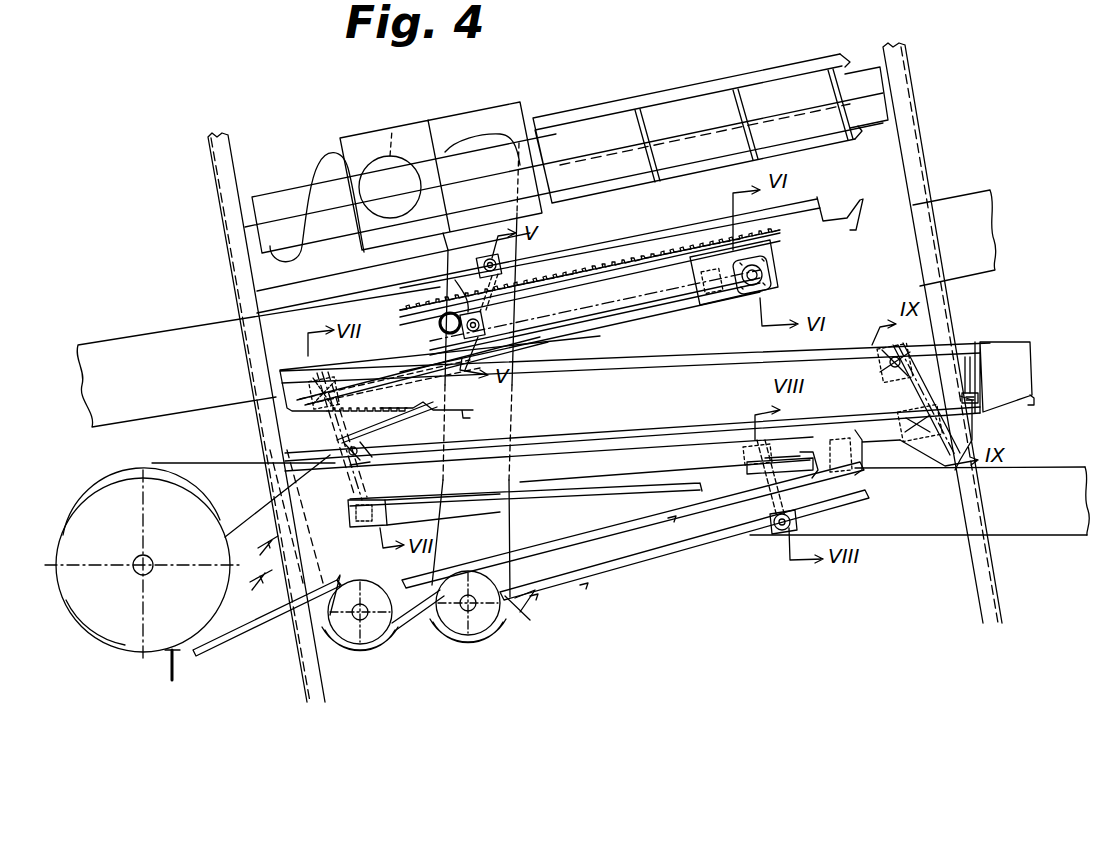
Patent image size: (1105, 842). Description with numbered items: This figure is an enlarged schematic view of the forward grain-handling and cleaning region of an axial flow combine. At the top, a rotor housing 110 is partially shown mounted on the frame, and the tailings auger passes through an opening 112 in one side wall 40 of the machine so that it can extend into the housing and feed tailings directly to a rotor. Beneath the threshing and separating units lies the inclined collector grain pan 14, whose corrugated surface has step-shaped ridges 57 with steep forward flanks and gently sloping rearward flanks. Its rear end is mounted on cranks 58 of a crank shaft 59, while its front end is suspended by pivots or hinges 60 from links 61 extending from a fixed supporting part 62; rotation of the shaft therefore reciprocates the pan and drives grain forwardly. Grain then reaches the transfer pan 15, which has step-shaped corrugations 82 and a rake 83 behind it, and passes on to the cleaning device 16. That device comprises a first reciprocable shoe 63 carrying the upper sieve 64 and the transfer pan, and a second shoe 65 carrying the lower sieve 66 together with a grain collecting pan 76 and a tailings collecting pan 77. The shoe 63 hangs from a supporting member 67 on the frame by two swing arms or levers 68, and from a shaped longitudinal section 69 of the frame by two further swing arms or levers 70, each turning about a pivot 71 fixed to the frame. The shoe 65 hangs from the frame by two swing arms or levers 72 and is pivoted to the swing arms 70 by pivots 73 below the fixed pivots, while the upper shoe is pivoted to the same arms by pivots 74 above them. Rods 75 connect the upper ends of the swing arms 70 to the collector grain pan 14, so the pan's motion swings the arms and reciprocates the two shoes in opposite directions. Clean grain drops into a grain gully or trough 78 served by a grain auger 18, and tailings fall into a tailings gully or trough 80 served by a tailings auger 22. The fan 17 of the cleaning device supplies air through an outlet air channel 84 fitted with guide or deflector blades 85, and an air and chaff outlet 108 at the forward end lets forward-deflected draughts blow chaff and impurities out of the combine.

The air and chaff outlet 108 is at (258, 352).
The side wall 40 is at (927, 79).
The housing 110 is at (492, 91).
The opening 112 is at (399, 130).
The collector grain pan 14 is at (634, 254).
The step-shaped ridges 57 is at (573, 254).
The fixed supporting part 62 is at (503, 318).
The rods 75 is at (548, 342).
The cranks 58 is at (768, 277).
The crank shaft 59 is at (779, 277).
The pivots or hinges 60 is at (484, 258).
The links 61 is at (455, 284).
The first reciprocable shoe 63 is at (738, 369).
The upper sieve 64 is at (676, 440).
The lower sieve 66 is at (560, 487).
The rake 83 is at (470, 413).
The step-shaped corrugations 82 is at (366, 400).
The transfer pan 15 is at (393, 392).
The pivots 74 is at (320, 381).
The swing arms or levers 70 is at (340, 493).
The pivot 71 is at (340, 452).
The pivots 73 is at (358, 525).
The guide or deflector blades 85 is at (280, 549).
The fan 17 is at (98, 651).
The outlet air channel 84 is at (234, 626).
The grain auger 18 is at (385, 631).
The grain gully or trough 78 is at (372, 646).
The tailings auger 22 is at (490, 616).
The tailings gully or trough 80 is at (486, 637).
The grain collecting pan 76 is at (580, 536).
The second shoe 65 is at (655, 536).
The tailings collecting pan 77 is at (624, 565).
The swing arms or levers 72 is at (790, 504).
The supporting member 67 is at (910, 347).
The swing arms or levers 68 is at (888, 396).
The cleaning device 16 is at (1002, 321).
The shaped longitudinal section 69 is at (1064, 459).